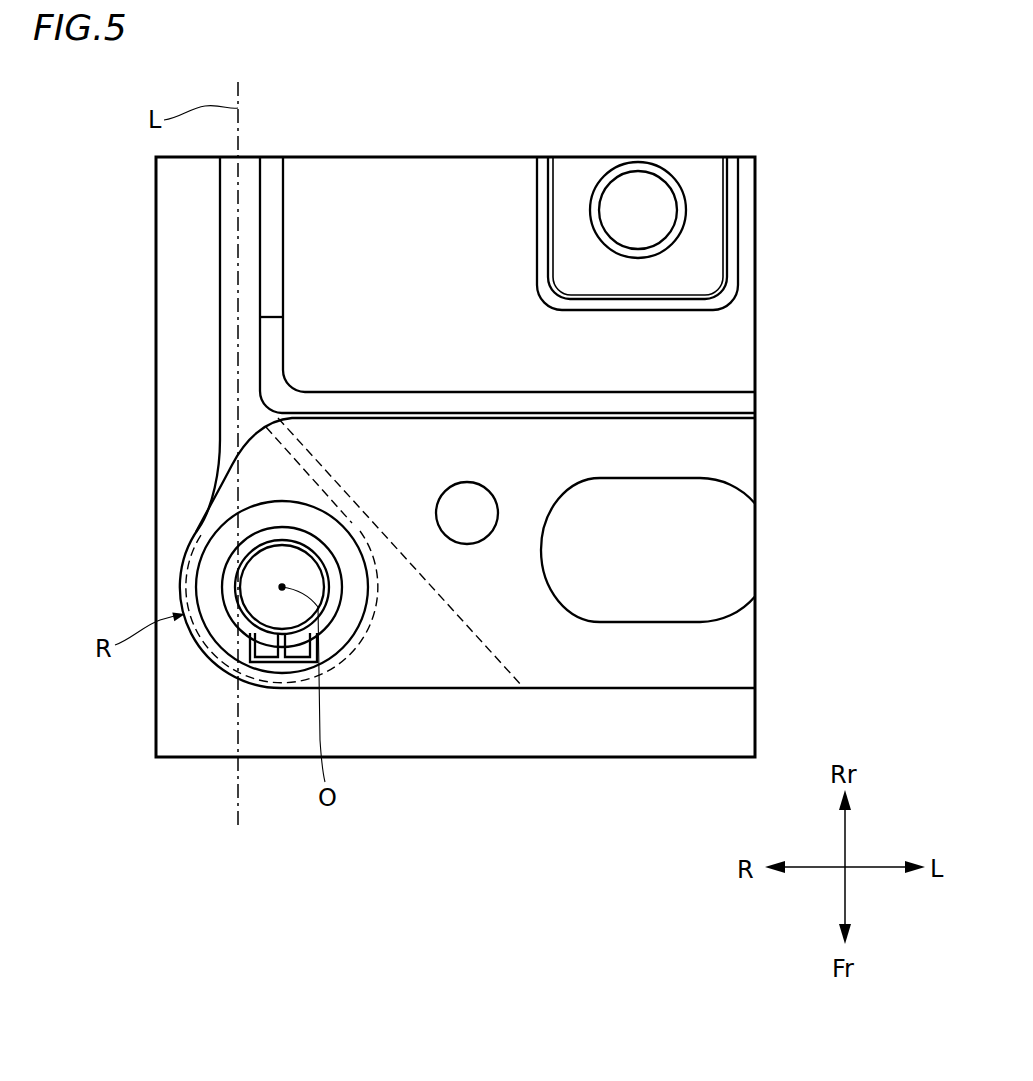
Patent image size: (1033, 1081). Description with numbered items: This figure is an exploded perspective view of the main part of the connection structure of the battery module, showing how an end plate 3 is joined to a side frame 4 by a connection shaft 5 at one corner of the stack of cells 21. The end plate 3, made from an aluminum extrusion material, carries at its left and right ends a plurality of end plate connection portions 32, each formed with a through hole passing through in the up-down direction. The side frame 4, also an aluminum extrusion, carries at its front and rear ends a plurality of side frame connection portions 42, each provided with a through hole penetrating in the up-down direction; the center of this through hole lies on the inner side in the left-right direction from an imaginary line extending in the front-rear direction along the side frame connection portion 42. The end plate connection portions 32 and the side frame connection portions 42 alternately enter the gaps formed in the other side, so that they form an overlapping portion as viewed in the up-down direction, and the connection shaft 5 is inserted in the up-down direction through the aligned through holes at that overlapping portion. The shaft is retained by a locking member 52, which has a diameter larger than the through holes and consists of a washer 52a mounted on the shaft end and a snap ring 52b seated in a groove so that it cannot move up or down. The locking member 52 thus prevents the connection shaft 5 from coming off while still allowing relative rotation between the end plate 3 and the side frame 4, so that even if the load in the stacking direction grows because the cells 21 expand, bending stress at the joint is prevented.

The end plate 3 is at (670, 688).
The side frame 4 is at (220, 290).
The connection shaft 5 is at (268, 612).
The cell 21 is at (462, 196).
The end plate connection portion 32 is at (207, 503).
The side frame connection portion 42 is at (360, 648).
The locking member 52 is at (535, 768).
The washer 52a is at (365, 613).
The snap ring 52b is at (343, 573).